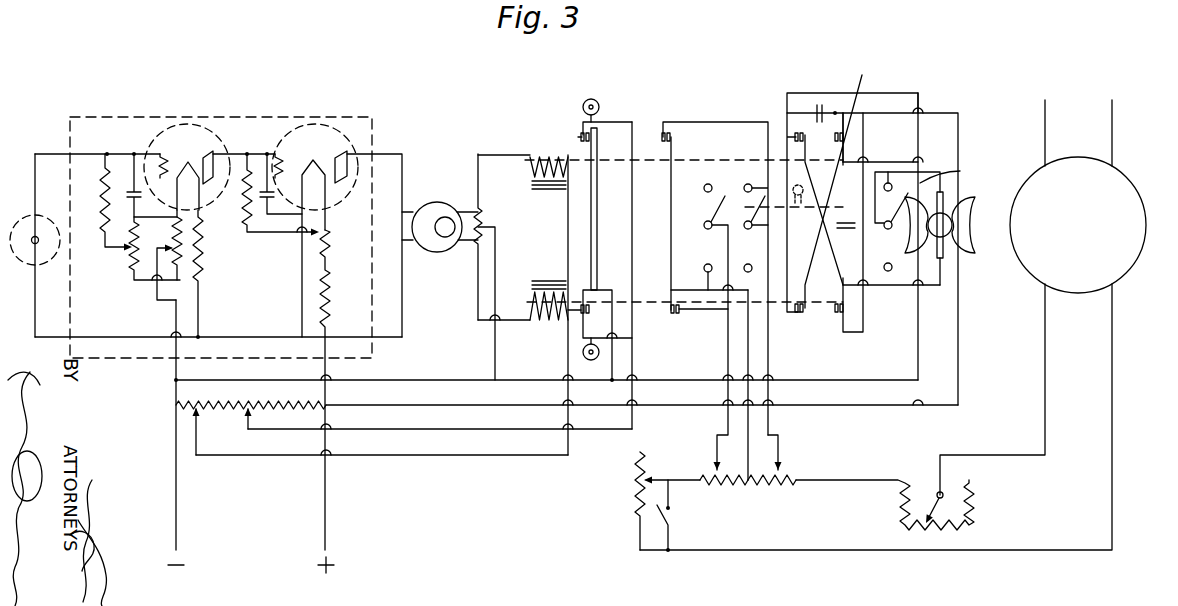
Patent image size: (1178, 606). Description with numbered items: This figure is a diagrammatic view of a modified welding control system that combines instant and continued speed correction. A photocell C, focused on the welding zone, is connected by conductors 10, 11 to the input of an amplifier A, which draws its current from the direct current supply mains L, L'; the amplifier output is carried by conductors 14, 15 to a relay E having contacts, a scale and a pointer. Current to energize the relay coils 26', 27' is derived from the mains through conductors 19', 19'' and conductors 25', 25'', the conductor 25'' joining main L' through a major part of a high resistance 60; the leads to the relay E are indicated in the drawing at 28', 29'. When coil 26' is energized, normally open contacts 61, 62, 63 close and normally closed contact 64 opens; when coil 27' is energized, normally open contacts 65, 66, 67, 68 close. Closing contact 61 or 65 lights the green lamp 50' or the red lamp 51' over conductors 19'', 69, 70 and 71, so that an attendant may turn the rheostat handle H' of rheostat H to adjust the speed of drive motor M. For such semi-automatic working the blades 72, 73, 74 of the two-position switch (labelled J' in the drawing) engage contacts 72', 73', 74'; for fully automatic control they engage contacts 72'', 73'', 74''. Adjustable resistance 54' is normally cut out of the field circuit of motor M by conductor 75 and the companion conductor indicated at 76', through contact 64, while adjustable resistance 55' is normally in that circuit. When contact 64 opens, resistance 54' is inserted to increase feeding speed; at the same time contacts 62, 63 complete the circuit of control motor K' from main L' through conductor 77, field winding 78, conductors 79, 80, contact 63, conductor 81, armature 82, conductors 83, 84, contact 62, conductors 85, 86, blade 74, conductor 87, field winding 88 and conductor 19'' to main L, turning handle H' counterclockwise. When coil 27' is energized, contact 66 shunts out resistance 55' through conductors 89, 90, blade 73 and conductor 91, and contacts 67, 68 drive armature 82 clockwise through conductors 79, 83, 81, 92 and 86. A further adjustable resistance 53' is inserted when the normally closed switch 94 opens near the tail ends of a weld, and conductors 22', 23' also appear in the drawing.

The conductor 10 is at (52, 149).
The conductor 11 is at (43, 336).
The conductor 14 is at (378, 338).
The conductor 15 is at (384, 152).
The conductor 19' is at (478, 350).
The conductor 19'' is at (547, 236).
The conductor 22' is at (1024, 421).
The conductor 23' is at (900, 417).
The conductor 25' is at (544, 305).
The conductor 25'' is at (382, 468).
The relay coil 26' is at (536, 291).
The relay coil 27' is at (523, 185).
The conductor 28' is at (482, 273).
The conductor 29' is at (460, 235).
The green lamp 50' is at (563, 351).
The red lamp 51' is at (608, 101).
The adjustable resistance 53' is at (641, 501).
The adjustable resistance 54' is at (724, 492).
The adjustable resistance 55' is at (772, 494).
The high resistance 60 is at (234, 408).
The contact 61 is at (580, 320).
The contact 62 is at (800, 315).
The contact 63 is at (835, 315).
The contact 64 is at (674, 315).
The contact 65 is at (610, 132).
The contact 66 is at (674, 138).
The contact 67 is at (825, 130).
The contact 68 is at (839, 183).
The conductor 69 is at (595, 290).
The conductor 70 is at (580, 255).
The conductor 71 is at (632, 187).
The switch blade 72 is at (701, 212).
The switch contact 72' is at (696, 260).
The switch contact 72'' is at (694, 180).
The switch blade 73 is at (744, 212).
The switch contact 73' is at (747, 255).
The switch contact 73'' is at (732, 178).
The switch blade 74 is at (888, 219).
The switch contact 74' is at (880, 258).
The switch contact 74'' is at (898, 160).
The conductor 75 is at (727, 358).
The conductor 76' is at (736, 385).
The conductor 77 is at (676, 407).
The field winding 78 is at (962, 195).
The conductor 79 is at (890, 232).
The conductor 80 is at (863, 316).
The conductor 81 is at (904, 286).
The armature 82 is at (943, 223).
The conductor 83 is at (920, 162).
The conductor 84 is at (812, 263).
The conductor 85 is at (790, 263).
The conductor 86 is at (833, 93).
The conductor 87 is at (960, 171).
The field winding 88 is at (908, 253).
The conductor 89 is at (670, 215).
The conductor 90 is at (710, 286).
The conductor 91 is at (779, 362).
The conductor 92 is at (813, 192).
The switch 94 is at (675, 516).
The amplifier A is at (189, 116).
The photocell C is at (44, 217).
The relay E is at (437, 253).
The rheostat H is at (902, 505).
The rheostat handle H' is at (943, 508).
The lamp J' is at (797, 208).
The control motor K' is at (981, 266).
The supply main L is at (606, 332).
The supply main L' is at (730, 336).
The drive motor M is at (1123, 181).